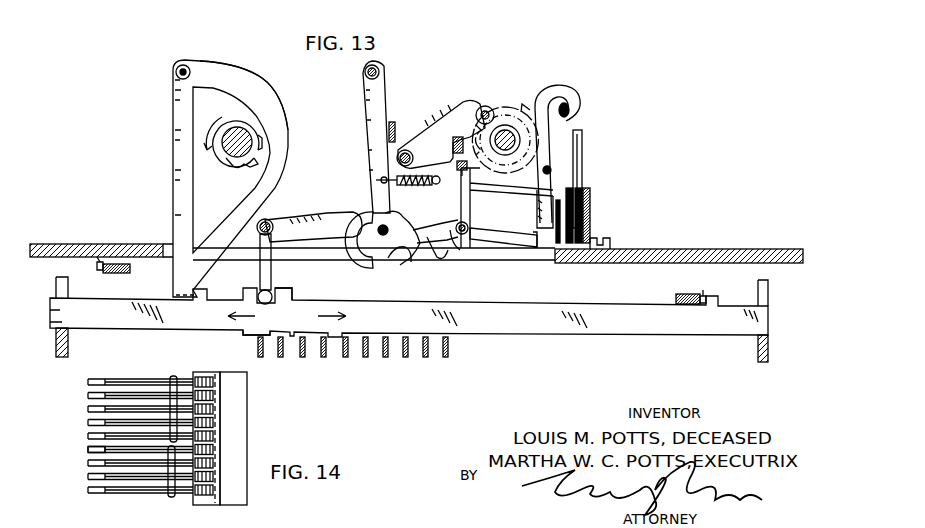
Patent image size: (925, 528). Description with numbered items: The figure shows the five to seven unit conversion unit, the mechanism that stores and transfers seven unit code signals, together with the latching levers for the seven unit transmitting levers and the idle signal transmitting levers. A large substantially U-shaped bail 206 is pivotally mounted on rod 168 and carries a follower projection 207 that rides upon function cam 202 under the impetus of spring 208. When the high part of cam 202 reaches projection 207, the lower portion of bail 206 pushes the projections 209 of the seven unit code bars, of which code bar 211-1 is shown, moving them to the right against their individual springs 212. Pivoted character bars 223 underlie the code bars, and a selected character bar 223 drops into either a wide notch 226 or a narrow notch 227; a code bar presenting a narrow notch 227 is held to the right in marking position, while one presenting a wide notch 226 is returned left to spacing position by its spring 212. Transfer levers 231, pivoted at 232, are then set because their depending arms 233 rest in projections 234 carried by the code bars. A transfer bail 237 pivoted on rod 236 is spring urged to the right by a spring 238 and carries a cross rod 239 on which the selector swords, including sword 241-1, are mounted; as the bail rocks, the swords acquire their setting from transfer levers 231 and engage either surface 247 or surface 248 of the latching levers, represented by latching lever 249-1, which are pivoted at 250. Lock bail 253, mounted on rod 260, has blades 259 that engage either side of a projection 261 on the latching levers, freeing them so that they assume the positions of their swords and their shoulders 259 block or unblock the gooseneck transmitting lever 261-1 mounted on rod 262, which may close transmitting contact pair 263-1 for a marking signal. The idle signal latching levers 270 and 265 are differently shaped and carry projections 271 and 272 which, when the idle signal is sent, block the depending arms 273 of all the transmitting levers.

In FIG. 13, the rod 168 is at (186, 64).
In FIG. 13, the bail 206 is at (236, 82).
In FIG. 13, the function cam 202 is at (246, 128).
In FIG. 13, the follower projection 207 is at (264, 144).
In FIG. 13, the pivot 232 is at (268, 221).
In FIG. 13, the transfer lever 231 is at (318, 234).
In FIG. 13, the depending arm 233 is at (271, 268).
In FIG. 13, the projection 234 is at (268, 289).
In FIG. 13, the projection 209 is at (180, 295).
In FIG. 13, the spring 208 is at (113, 273).
In FIG. 13, the wide notch 226 is at (250, 334).
In FIG. 13, the narrow notch 227 is at (294, 333).
In FIG. 13, the character bar 223 is at (452, 357).
In FIG. 13, the seven unit code bar 211-1 is at (483, 323).
In FIG. 13, the spring 212 is at (690, 294).
In FIG. 13, the rod 236 is at (377, 64).
In FIG. 13, the transfer bail 237 is at (387, 78).
In FIG. 13, the rod 260 is at (405, 150).
In FIG. 13, the blade 259 is at (455, 146).
In FIG. 13, the lock bail 253 is at (462, 102).
In FIG. 13, the projection 261 is at (458, 166).
In FIG. 13, the spring 238 is at (410, 187).
In FIG. 13, the latching lever 249-1 is at (472, 196).
In FIG. 13, the surface 247 is at (472, 211).
In FIG. 13, the cross rod 239 is at (383, 237).
In FIG. 13, the pivot 250 is at (396, 258).
In FIG. 13, the surface 248 is at (462, 235).
In FIG. 13, the selector sword 241-1 is at (407, 258).
In FIG. 13, the idle signal latching lever 265 is at (517, 240).
In FIG. 14, the idle signal latching lever 265 is at (117, 432).
In FIG. 13, the projection 272 is at (538, 250).
In FIG. 14, the projection 272 is at (166, 382).
In FIG. 13, the gooseneck transmitting lever 261-1 is at (552, 85).
In FIG. 13, the transmitting contact pair 263-1 is at (578, 130).
In FIG. 13, the rod 262 is at (551, 171).
In FIG. 13, the depending arm 273 is at (583, 225).
In FIG. 14, the idle signal latching lever 270 is at (117, 450).
In FIG. 14, the projection 271 is at (168, 484).